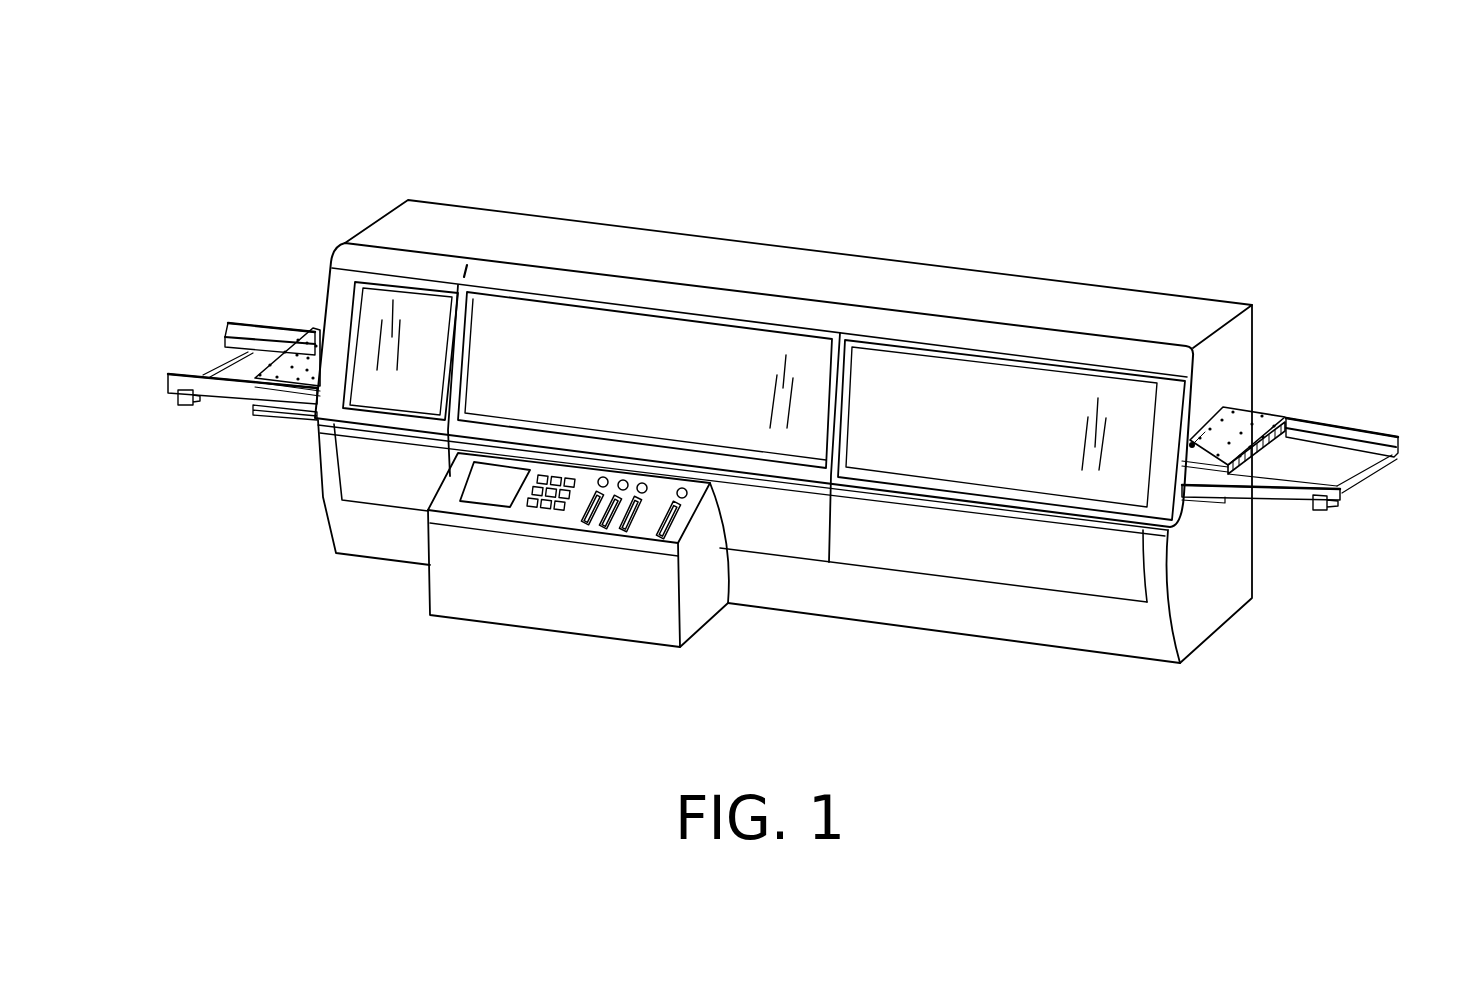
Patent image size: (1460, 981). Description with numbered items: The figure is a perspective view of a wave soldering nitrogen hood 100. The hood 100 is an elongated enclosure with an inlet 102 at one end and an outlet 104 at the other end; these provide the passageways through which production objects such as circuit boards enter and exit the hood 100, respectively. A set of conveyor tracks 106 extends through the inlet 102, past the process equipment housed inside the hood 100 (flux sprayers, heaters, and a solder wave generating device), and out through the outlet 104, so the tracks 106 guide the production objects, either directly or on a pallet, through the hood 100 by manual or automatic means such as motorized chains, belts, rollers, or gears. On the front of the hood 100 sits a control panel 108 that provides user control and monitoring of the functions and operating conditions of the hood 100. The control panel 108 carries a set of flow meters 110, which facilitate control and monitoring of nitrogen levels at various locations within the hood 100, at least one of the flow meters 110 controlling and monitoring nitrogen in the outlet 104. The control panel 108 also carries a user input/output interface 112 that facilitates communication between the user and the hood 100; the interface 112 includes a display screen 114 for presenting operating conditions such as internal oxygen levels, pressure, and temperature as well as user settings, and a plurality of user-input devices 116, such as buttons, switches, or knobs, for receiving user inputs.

The nitrogen hood 100 is at (1172, 133).
The inlet 102 is at (273, 304).
The outlet 104 is at (1307, 395).
The conveyor tracks 106 is at (215, 319).
The control panel 108 is at (534, 618).
The flow meters 110 is at (664, 530).
The user input/output interface 112 is at (565, 512).
The display screen 114 is at (493, 483).
The user-input devices 116 is at (563, 487).